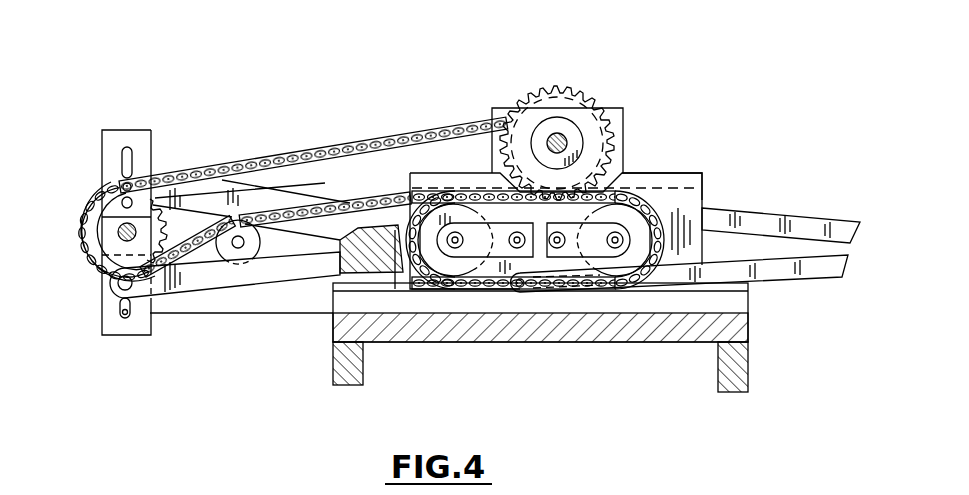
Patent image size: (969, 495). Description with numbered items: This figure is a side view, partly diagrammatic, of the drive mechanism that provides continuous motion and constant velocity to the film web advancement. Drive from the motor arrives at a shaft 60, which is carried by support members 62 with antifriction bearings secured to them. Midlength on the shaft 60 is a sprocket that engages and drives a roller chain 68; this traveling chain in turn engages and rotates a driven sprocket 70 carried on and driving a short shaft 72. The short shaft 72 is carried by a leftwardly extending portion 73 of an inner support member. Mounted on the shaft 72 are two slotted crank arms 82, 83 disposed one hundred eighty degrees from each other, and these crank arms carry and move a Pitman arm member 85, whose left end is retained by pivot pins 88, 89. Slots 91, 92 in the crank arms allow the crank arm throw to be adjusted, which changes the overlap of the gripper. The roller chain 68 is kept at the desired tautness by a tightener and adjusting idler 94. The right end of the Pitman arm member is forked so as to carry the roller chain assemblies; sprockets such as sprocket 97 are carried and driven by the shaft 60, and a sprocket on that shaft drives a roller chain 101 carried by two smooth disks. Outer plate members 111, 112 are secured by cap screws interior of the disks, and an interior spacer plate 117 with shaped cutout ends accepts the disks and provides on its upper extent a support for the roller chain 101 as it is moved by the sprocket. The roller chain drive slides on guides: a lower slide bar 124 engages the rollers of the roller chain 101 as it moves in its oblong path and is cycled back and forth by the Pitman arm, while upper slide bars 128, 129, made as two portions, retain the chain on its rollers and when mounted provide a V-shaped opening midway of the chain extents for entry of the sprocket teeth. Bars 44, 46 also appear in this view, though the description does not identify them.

The upper bar 44 is at (803, 223).
The lower bar 46 is at (783, 270).
The shaft 60 is at (553, 140).
The support members 62 is at (623, 117).
The roller chain 68 is at (290, 153).
The driven sprocket 70 is at (95, 233).
The short shaft 72 is at (117, 226).
The leftwardly extending portion 73 is at (253, 298).
The slotted crank arm 82 is at (108, 310).
The slotted crank arm 83 is at (110, 137).
The Pitman arm member 85 is at (200, 276).
The pivot pin 88 is at (118, 283).
The pivot pin 89 is at (115, 180).
The slot 91 is at (125, 317).
The slot 92 is at (128, 152).
The tightener and adjusting idler 94 is at (274, 250).
The sprocket 97 is at (580, 93).
The roller chain 101 is at (648, 213).
The outer plate member 111 is at (473, 245).
The outer plate member 112 is at (593, 245).
The interior spacer plate 117 is at (497, 270).
The lower slide bar 124 is at (658, 307).
The upper slide bar 128 is at (432, 180).
The upper slide bar 129 is at (690, 185).